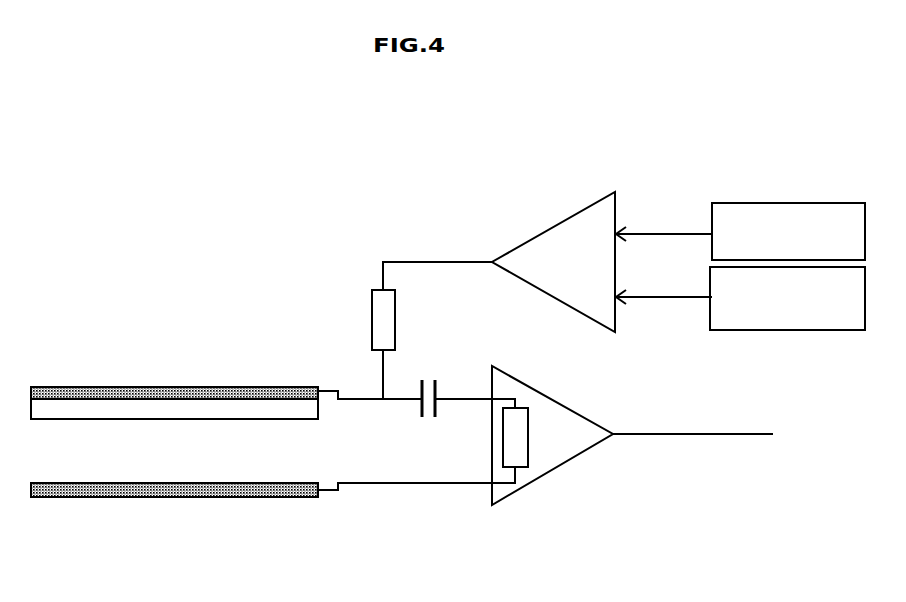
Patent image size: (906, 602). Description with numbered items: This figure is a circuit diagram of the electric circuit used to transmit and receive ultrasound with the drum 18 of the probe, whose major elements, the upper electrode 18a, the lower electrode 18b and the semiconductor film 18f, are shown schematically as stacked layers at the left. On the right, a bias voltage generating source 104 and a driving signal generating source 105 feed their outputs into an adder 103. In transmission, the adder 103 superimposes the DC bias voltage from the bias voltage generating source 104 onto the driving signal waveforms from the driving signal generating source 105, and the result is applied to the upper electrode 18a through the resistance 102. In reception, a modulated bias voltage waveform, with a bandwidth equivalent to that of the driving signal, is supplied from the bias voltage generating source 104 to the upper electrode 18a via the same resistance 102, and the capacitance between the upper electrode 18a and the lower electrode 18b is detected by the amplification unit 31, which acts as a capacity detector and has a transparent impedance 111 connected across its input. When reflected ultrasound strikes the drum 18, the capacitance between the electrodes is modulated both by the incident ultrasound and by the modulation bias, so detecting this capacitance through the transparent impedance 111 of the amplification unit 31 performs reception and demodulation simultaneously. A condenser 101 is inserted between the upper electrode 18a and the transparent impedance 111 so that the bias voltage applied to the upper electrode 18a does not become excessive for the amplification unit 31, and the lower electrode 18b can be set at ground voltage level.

The drum 18 is at (114, 337).
The upper electrode 18a is at (216, 386).
The semiconductor film 18f is at (106, 409).
The lower electrode 18b is at (200, 498).
The resistance 102 is at (396, 295).
The condenser 101 is at (435, 383).
The transparent impedance 111 is at (507, 443).
The amplification unit 31 is at (573, 450).
The adder 103 is at (546, 229).
The bias voltage generating source 104 is at (766, 203).
The driving signal generating source 105 is at (763, 331).